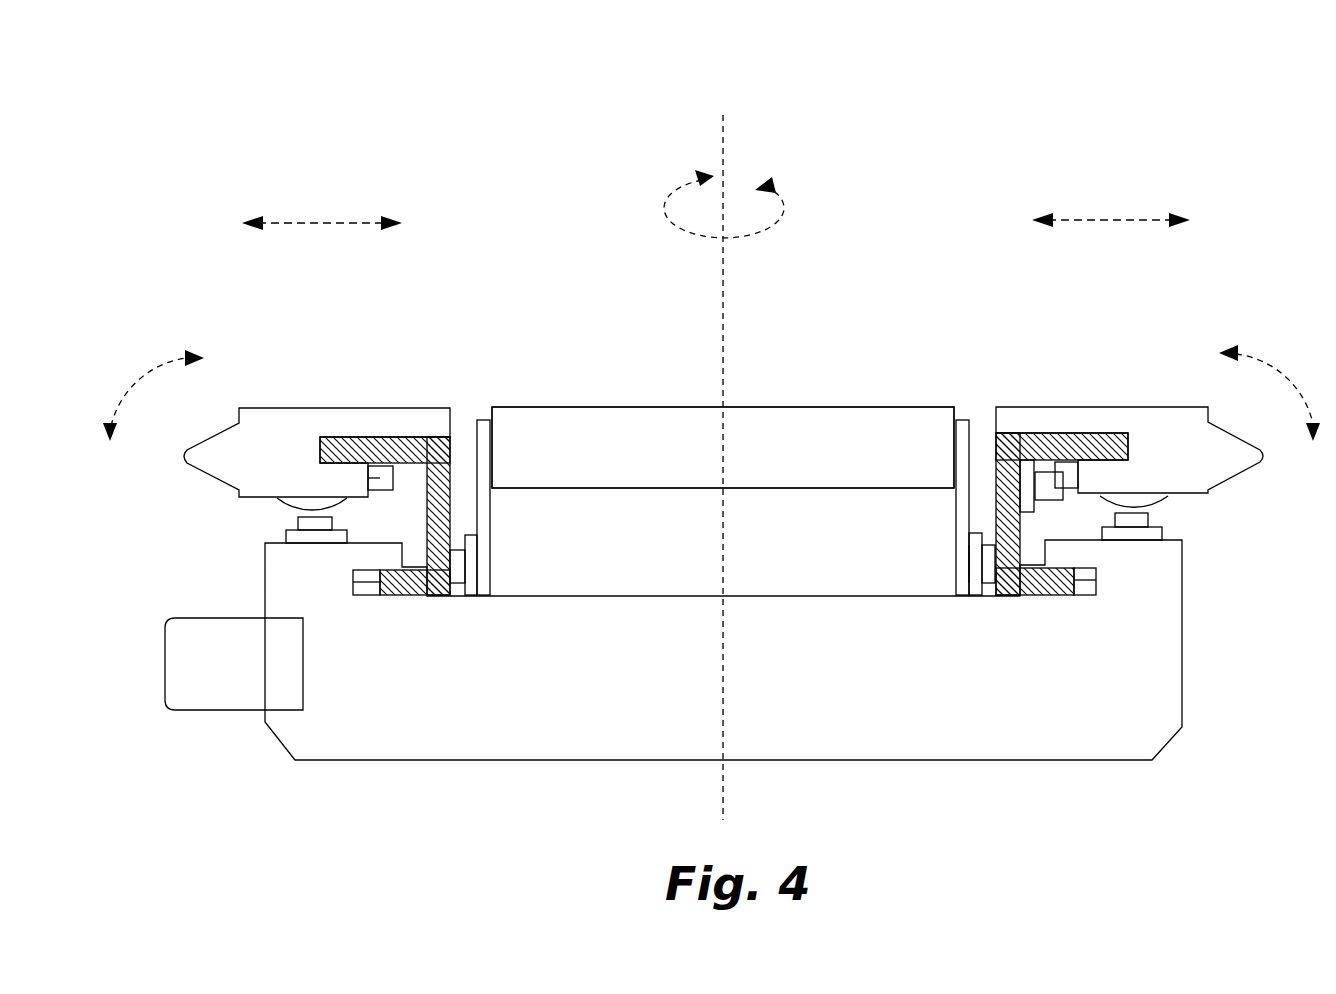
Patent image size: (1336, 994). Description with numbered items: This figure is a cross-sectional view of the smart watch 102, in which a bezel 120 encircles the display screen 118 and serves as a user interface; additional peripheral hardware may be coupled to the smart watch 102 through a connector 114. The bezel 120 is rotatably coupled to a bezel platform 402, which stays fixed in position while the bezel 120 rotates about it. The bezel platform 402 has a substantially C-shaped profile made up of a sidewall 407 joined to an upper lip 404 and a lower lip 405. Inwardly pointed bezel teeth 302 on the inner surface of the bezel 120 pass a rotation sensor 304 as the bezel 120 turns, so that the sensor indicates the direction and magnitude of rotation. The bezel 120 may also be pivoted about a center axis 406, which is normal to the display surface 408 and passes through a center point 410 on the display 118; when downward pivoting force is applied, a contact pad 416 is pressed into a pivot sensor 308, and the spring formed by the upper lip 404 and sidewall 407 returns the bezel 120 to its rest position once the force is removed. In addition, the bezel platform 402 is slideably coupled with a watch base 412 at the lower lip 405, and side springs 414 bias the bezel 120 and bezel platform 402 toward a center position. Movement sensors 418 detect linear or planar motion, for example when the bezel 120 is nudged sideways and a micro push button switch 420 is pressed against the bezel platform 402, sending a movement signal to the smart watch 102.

The smart watch 102 is at (913, 163).
The connector 114 is at (200, 710).
The display screen 118 is at (723, 447).
The bezel 120 is at (257, 408).
The bezel teeth 302 is at (380, 470).
The rotation sensor 304 is at (1022, 482).
The pivot sensor 308 is at (293, 517).
The bezel platform 402 is at (445, 440).
The upper lip 404 is at (338, 440).
The lower lip 405 is at (413, 590).
The center axis 406 is at (723, 455).
The sidewall 407 is at (478, 522).
The display surface 408 is at (583, 407).
The center point 410 is at (732, 397).
The watch base 412 is at (723, 650).
The side springs 414 is at (367, 593).
The contact pad 416 is at (280, 500).
The movement sensors 418 is at (473, 568).
The micro push button switch 420 is at (975, 562).